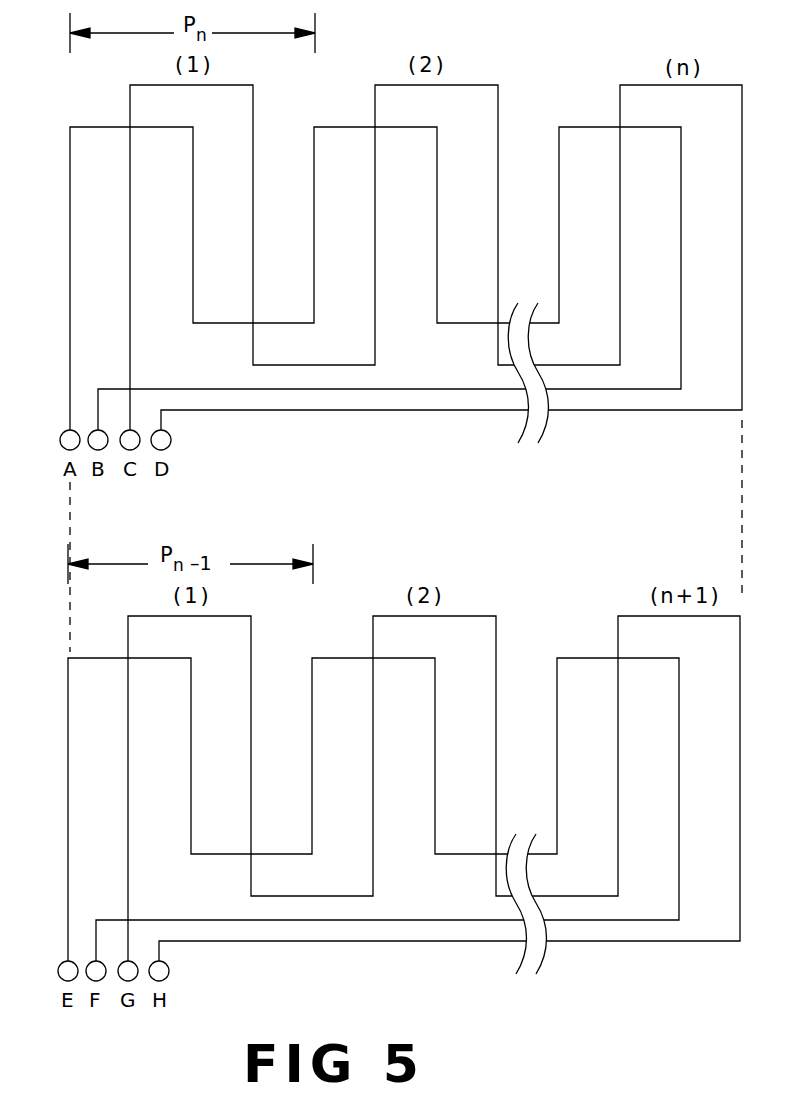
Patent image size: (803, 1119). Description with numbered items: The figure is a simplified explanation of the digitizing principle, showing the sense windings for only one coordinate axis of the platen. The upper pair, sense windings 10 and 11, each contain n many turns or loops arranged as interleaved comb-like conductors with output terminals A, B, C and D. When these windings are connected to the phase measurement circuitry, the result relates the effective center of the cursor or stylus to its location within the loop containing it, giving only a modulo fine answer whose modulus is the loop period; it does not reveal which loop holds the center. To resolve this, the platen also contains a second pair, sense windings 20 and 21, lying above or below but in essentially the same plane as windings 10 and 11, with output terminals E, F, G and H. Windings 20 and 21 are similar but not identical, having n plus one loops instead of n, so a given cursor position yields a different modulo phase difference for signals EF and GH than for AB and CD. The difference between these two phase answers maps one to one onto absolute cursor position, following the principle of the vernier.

The sense winding 10 is at (70, 178).
The sense winding 11 is at (130, 228).
The sense winding 20 is at (355, 819).
The sense winding 21 is at (415, 798).